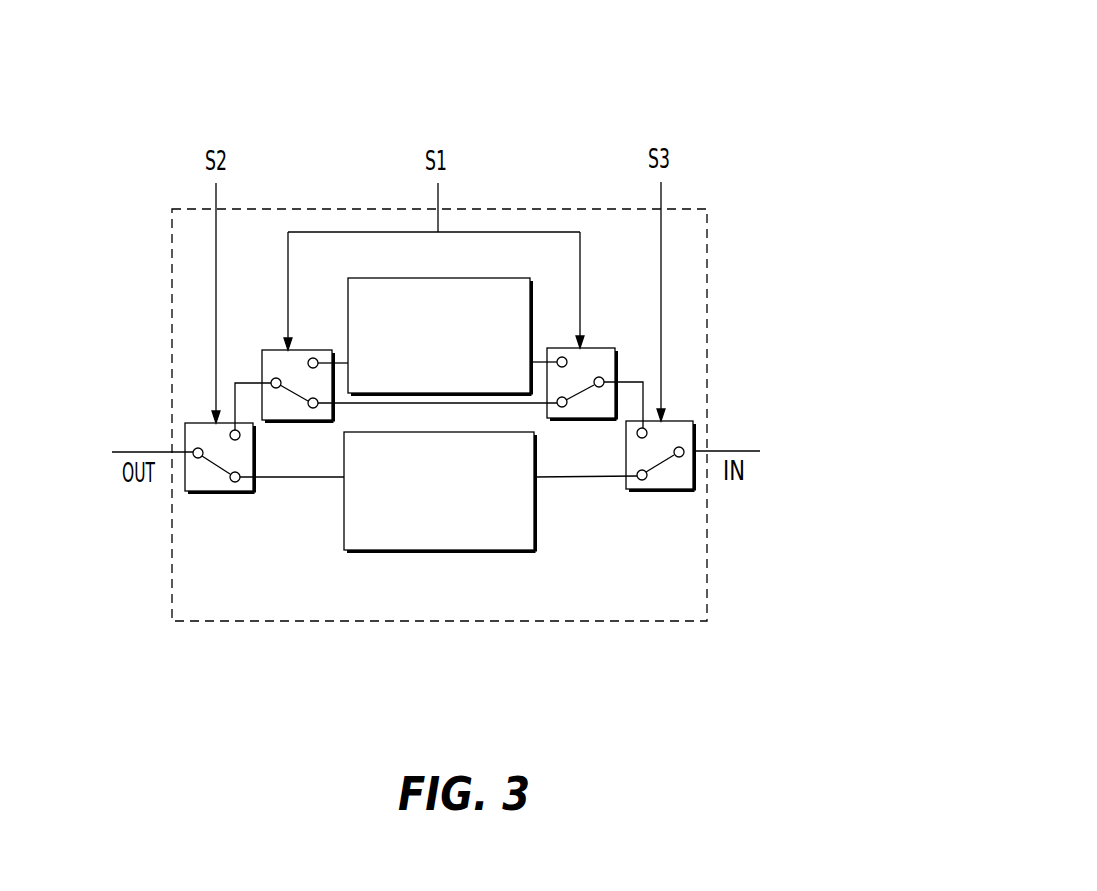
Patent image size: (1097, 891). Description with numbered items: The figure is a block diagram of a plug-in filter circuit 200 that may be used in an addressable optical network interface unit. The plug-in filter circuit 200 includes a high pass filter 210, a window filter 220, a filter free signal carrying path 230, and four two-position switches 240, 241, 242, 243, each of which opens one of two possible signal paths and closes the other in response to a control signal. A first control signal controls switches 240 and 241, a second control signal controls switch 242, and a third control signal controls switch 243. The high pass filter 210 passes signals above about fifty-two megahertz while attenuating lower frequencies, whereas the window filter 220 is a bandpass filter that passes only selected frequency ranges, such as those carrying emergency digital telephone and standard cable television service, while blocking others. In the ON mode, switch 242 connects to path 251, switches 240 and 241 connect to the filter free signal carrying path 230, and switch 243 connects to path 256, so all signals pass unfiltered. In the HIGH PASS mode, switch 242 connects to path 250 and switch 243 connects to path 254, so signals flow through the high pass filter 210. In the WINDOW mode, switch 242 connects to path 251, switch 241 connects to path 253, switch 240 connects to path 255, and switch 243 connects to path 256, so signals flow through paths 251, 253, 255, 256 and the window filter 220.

The plug-in filter circuit 200 is at (692, 107).
The high pass filter 210 is at (433, 550).
The window filter 220 is at (510, 283).
The filter free signal carrying path 230 is at (537, 398).
The switch 240 is at (605, 348).
The switch 241 is at (262, 350).
The switch 242 is at (197, 492).
The switch 243 is at (697, 430).
The path 250 is at (282, 478).
The path 251 is at (232, 407).
The path 253 is at (320, 350).
The path 254 is at (587, 478).
The path 255 is at (538, 395).
The path 256 is at (636, 382).